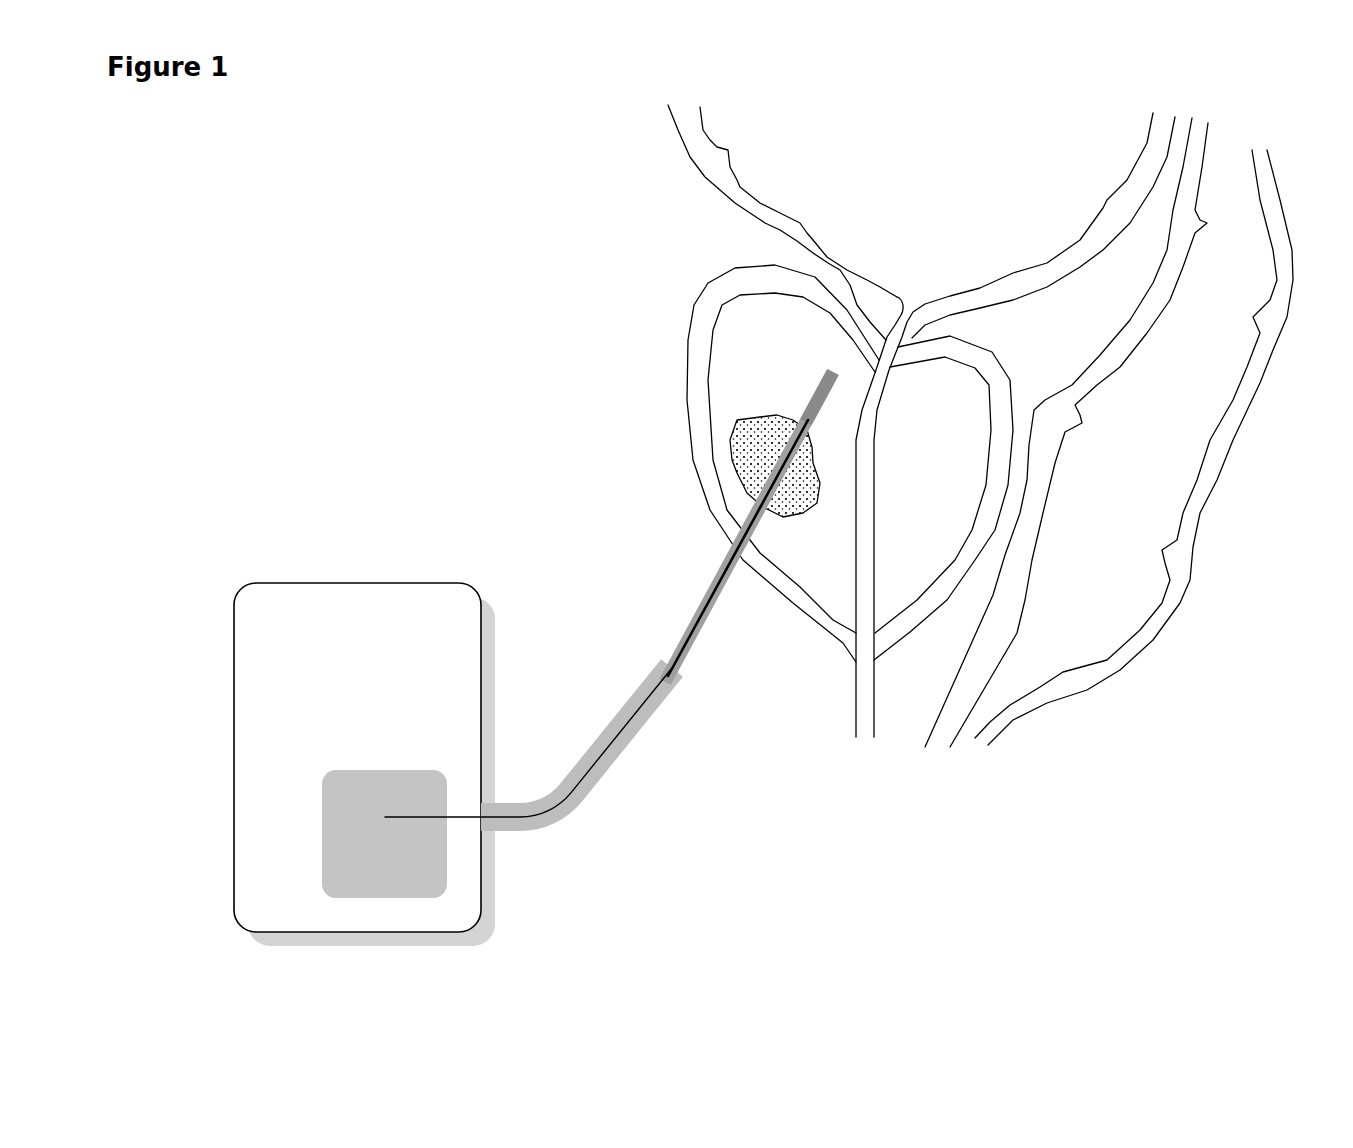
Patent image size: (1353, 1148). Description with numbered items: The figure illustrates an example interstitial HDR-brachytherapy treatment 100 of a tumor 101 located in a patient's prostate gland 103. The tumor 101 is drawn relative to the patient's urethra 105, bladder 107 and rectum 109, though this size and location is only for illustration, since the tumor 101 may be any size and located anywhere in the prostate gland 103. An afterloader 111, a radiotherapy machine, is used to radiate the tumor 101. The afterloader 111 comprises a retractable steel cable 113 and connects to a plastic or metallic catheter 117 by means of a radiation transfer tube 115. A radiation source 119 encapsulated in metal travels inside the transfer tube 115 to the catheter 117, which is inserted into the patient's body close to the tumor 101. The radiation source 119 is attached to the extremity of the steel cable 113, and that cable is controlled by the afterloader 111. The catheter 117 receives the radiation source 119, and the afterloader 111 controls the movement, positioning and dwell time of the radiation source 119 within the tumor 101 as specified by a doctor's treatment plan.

The interstitial brachytherapy treatment 100 is at (231, 357).
The tumor 101 is at (746, 463).
The prostate gland 103 is at (763, 330).
The urethra 105 is at (915, 295).
The bladder 107 is at (921, 208).
The rectum 109 is at (1109, 432).
The afterloader 111 is at (364, 764).
The steel cable 113 is at (651, 726).
The radiation transfer tube 115 is at (600, 827).
The catheter 117 is at (681, 584).
The radiation source 119 is at (799, 393).